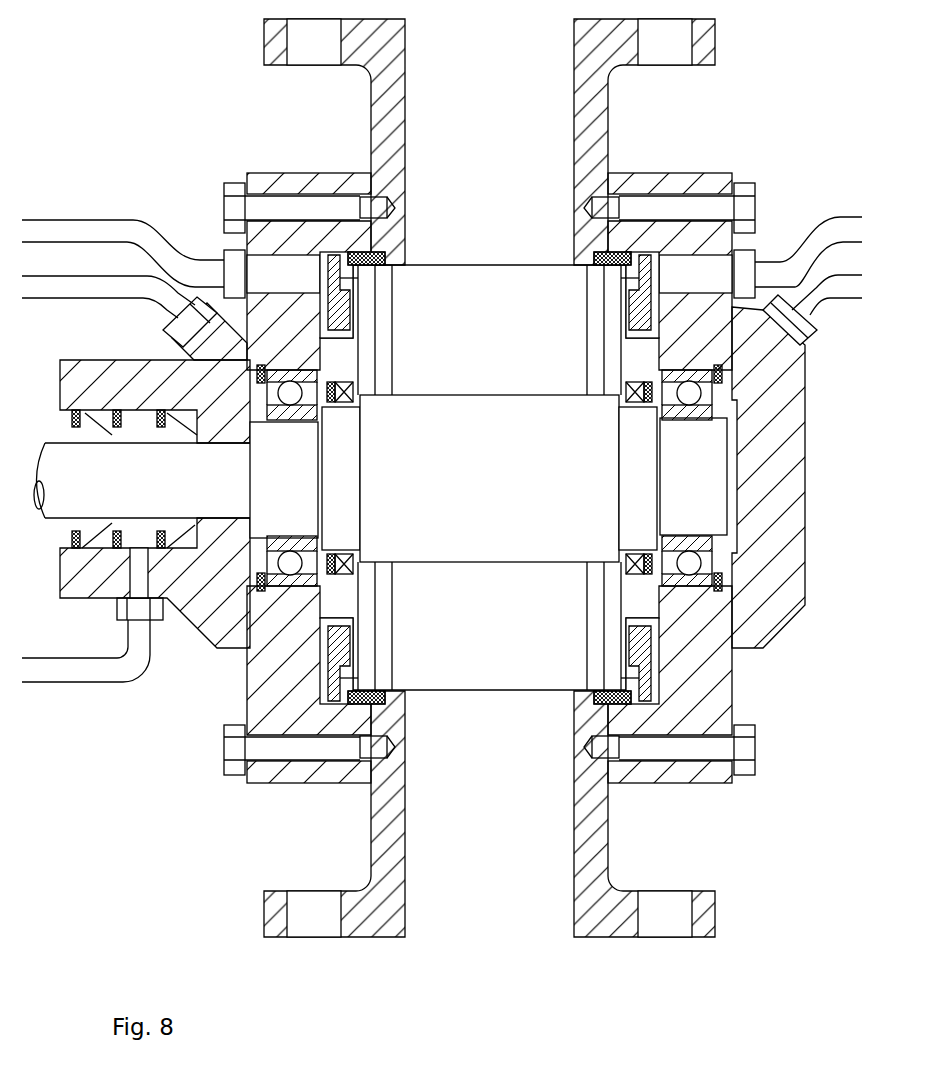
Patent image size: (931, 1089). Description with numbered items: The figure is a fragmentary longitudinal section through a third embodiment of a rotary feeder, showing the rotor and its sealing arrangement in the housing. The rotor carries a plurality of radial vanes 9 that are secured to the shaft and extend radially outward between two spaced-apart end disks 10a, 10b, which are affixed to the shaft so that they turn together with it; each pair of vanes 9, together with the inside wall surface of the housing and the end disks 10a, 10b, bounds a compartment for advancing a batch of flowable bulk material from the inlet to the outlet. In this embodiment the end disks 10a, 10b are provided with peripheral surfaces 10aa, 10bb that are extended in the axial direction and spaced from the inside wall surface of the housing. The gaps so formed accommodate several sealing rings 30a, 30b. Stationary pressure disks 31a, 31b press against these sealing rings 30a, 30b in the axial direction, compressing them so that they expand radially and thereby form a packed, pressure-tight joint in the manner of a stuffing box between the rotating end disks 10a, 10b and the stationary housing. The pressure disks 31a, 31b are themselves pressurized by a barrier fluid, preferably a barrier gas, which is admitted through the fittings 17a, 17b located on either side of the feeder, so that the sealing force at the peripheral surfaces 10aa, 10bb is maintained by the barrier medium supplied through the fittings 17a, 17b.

The radial vanes 9 is at (487, 690).
The end disk 10a is at (393, 645).
The end disk 10b is at (587, 650).
The peripheral surface 10aa is at (366, 270).
The peripheral surface 10bb is at (612, 270).
The sealing rings 30a is at (368, 270).
The sealing rings 30b is at (608, 272).
The stationary pressure disk 31a is at (357, 627).
The stationary pressure disk 31b is at (628, 627).
The fitting 17a is at (236, 215).
The fitting 17b is at (757, 196).